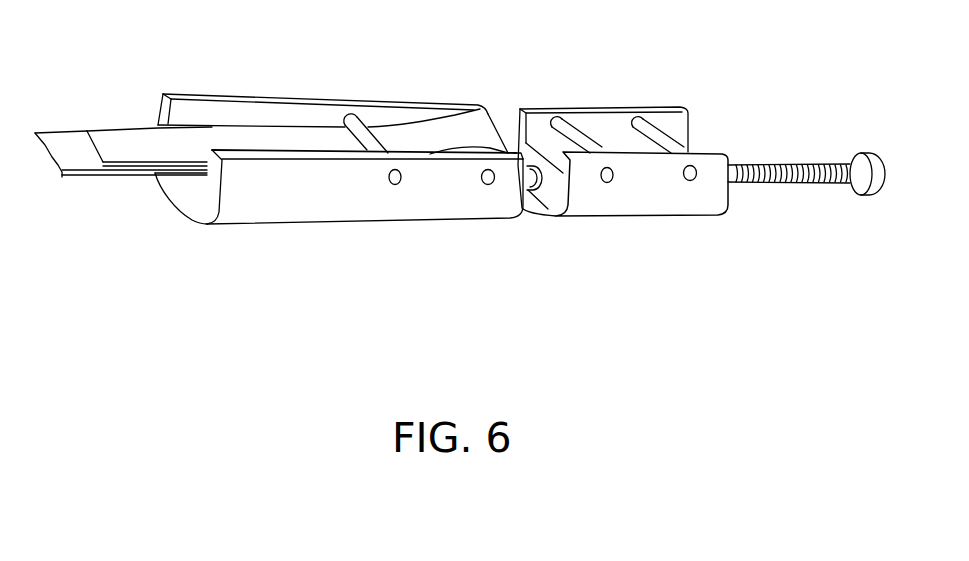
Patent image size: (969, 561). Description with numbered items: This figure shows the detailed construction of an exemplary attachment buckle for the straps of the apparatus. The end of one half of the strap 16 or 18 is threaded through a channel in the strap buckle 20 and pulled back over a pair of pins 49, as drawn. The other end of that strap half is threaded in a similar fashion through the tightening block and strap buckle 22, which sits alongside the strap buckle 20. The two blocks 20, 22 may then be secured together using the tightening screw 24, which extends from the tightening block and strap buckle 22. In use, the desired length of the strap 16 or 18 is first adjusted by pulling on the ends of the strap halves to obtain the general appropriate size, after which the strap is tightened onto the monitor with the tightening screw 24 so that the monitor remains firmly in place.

The strap 16 is at (121, 210).
The strap 18 is at (80, 158).
The strap buckle 20 is at (283, 207).
The tightening block and strap buckle 22 is at (644, 202).
The tightening screw 24 is at (797, 185).
The pins 49 is at (367, 125).